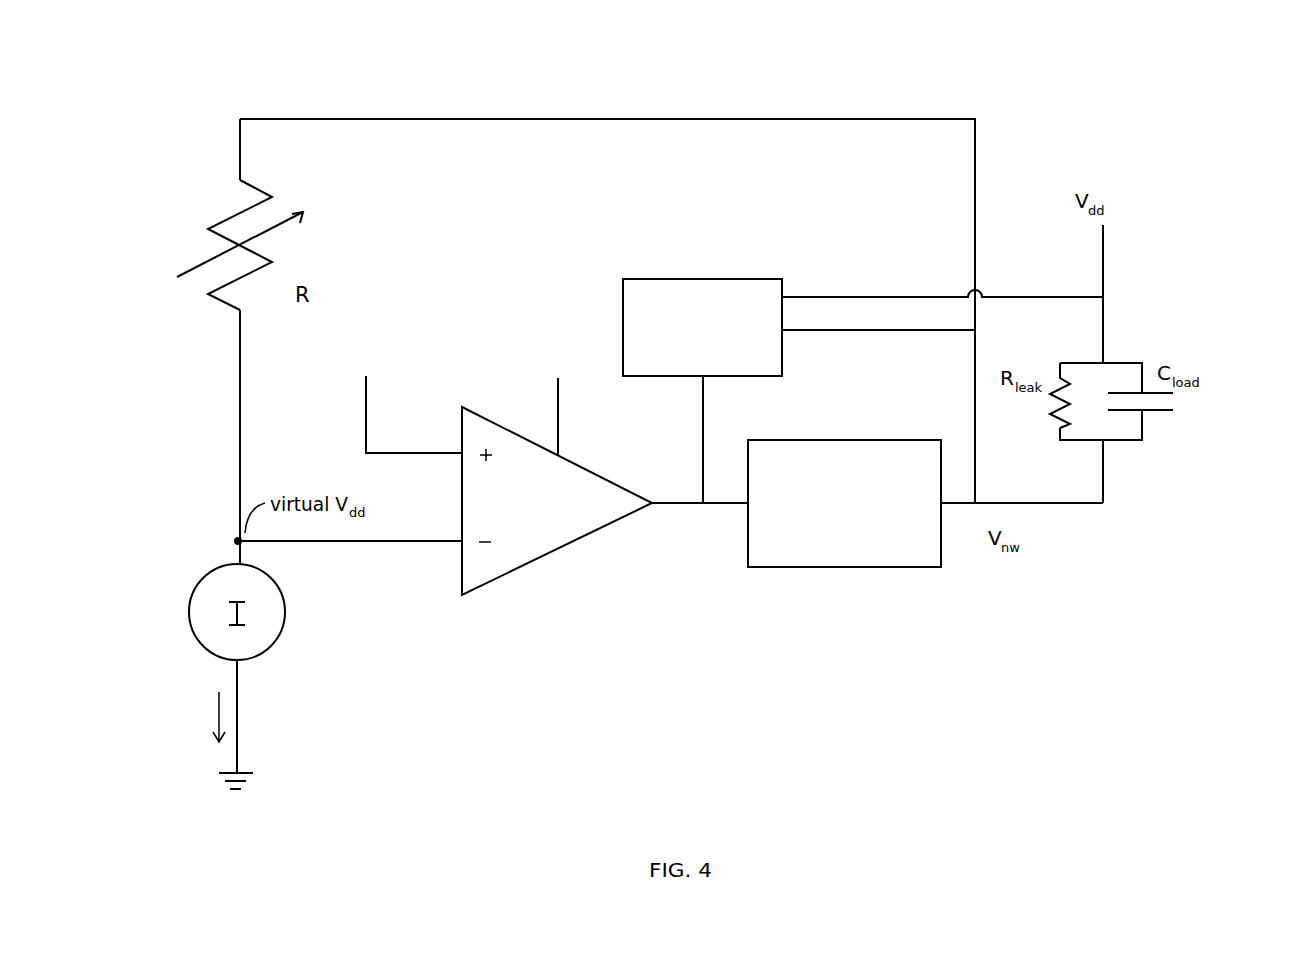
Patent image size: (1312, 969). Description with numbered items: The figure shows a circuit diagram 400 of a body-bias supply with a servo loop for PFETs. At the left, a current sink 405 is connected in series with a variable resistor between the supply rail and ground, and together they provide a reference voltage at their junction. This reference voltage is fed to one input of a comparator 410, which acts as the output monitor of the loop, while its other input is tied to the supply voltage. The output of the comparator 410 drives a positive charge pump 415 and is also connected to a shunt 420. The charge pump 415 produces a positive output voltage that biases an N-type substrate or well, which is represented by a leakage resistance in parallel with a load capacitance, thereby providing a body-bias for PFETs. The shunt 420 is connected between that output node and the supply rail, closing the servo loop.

The circuit diagram 400 is at (1282, 50).
The current sink 405 is at (254, 651).
The comparator 410 is at (560, 514).
The charge pump 415 is at (925, 562).
The shunt 420 is at (773, 306).